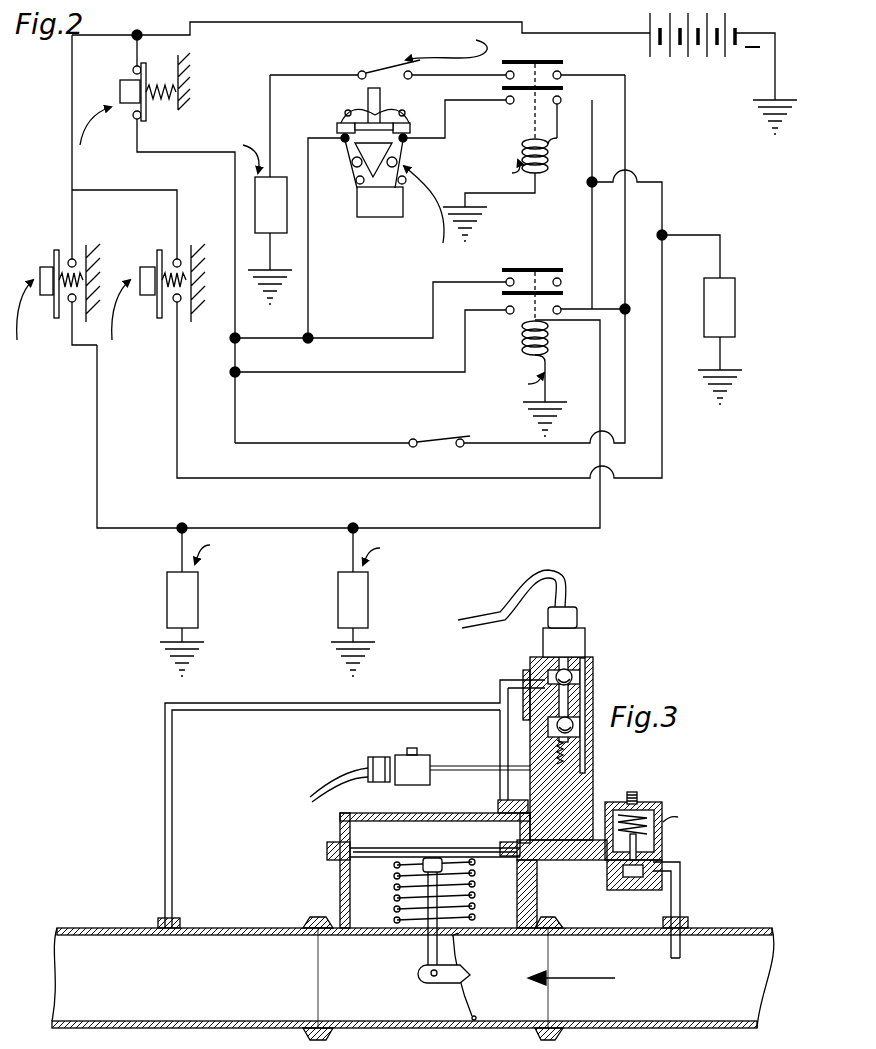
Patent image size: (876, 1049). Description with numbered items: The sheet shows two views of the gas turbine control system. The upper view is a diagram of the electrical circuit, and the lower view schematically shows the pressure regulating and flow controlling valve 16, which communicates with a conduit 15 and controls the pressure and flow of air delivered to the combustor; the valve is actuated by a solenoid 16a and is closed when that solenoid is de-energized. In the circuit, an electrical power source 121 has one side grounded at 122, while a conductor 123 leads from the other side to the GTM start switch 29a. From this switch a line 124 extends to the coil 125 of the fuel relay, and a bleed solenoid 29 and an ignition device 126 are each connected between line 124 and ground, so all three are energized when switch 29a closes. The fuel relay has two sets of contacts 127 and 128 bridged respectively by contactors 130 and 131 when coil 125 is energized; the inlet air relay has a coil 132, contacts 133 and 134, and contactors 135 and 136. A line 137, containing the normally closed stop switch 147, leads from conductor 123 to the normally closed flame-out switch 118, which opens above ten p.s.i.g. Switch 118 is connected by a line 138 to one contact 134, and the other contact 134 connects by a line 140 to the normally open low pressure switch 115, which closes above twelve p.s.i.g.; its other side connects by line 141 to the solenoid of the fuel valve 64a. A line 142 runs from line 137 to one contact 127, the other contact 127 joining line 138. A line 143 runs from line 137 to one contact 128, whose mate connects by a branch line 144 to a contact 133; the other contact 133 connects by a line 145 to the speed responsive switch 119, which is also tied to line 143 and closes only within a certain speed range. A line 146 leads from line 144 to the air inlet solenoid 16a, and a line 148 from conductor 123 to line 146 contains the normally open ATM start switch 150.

In FIG. 3, the conduit 15 is at (713, 920).
In FIG. 3, the pressure regulating and flow controlling valve 16 is at (336, 895).
In FIG. 2, the solenoid 16a is at (715, 278).
In FIG. 3, the solenoid 16a is at (592, 645).
In FIG. 2, the bleed solenoid 29 is at (166, 600).
In FIG. 2, the GTM start switch 29a is at (52, 264).
In FIG. 2, the solenoid operated fuel valve 64a is at (226, 210).
In FIG. 2, the low pressure switch 115 is at (365, 65).
In FIG. 2, the flame-out switch 118 is at (446, 450).
In FIG. 2, the speed responsive switch 119 is at (349, 102).
In FIG. 2, the electrical power source 121 is at (648, 25).
In FIG. 2, the ground 122 is at (762, 101).
In FIG. 2, the conductor 123 is at (169, 32).
In FIG. 2, the line 124 is at (97, 492).
In FIG. 2, the fuel relay coil 125 is at (548, 334).
In FIG. 2, the ignition device 126 is at (338, 600).
In FIG. 2, the fuel relay contacts 127 is at (506, 310).
In FIG. 2, the fuel relay contacts 128 is at (506, 282).
In FIG. 2, the contactor 130 is at (562, 288).
In FIG. 2, the contactor 131 is at (545, 268).
In FIG. 2, the inlet air relay coil 132 is at (538, 138).
In FIG. 2, the inlet air relay contacts 133 is at (506, 104).
In FIG. 2, the inlet air relay contacts 134 is at (505, 64).
In FIG. 2, the contactor 135 is at (572, 97).
In FIG. 2, the contactor 136 is at (563, 63).
In FIG. 2, the line 137 is at (235, 210).
In FIG. 2, the line 138 is at (626, 150).
In FIG. 2, the line 140 is at (444, 77).
In FIG. 2, the line 141 is at (269, 100).
In FIG. 2, the line 142 is at (288, 371).
In FIG. 2, the line 143 is at (307, 157).
In FIG. 2, the branch line 144 is at (590, 213).
In FIG. 2, the line 145 is at (482, 97).
In FIG. 2, the line 146 is at (653, 180).
In FIG. 2, the stop switch 147 is at (120, 90).
In FIG. 2, the line 148 is at (178, 418).
In FIG. 2, the ATM start switch 150 is at (118, 270).